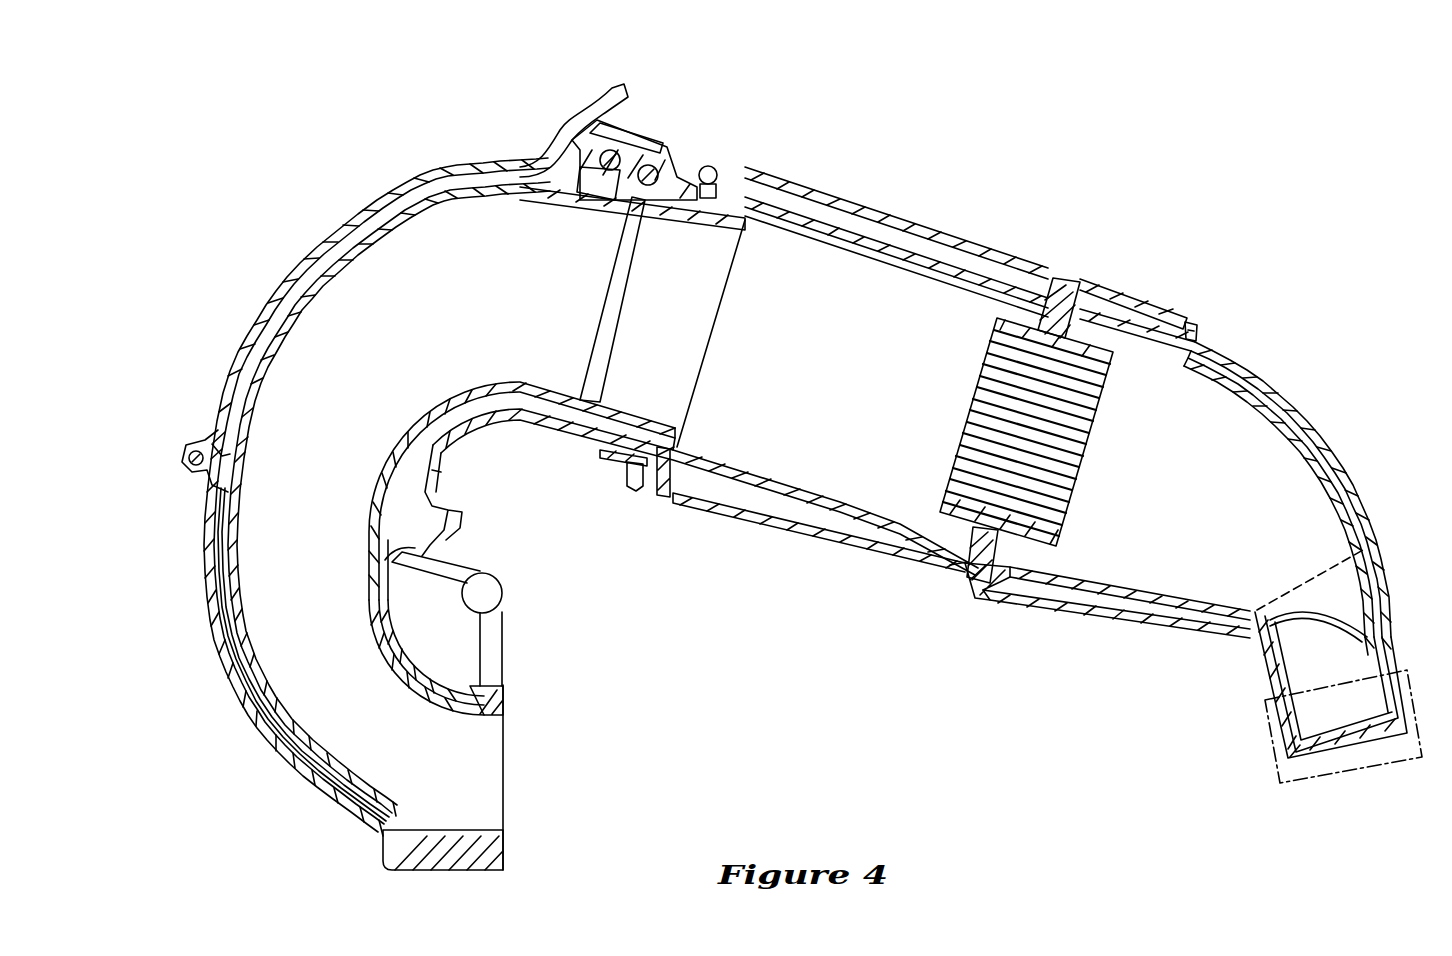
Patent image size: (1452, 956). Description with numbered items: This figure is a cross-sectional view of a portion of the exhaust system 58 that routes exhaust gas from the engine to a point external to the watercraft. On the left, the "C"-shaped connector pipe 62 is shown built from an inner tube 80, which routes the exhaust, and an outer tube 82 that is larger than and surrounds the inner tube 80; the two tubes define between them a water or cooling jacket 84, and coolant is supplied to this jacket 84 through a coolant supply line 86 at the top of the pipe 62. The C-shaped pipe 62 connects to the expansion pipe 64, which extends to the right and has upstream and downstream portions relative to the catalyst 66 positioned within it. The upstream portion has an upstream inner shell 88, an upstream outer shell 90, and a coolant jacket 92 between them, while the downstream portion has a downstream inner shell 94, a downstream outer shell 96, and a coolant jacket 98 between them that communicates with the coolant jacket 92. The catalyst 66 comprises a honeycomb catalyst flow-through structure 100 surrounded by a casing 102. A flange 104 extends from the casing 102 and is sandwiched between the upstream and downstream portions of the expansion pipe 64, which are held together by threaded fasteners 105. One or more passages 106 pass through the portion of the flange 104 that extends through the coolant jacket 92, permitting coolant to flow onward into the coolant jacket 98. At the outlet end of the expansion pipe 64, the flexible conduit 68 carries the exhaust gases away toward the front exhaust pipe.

The exhaust system 58 is at (941, 104).
The "C"-shaped connector pipe 62 is at (236, 293).
The expansion pipe 64 is at (1021, 192).
The catalyst 66 is at (1093, 430).
The flexible conduit 68 is at (1267, 720).
The inner tube 80 is at (322, 280).
The outer tube 82 is at (226, 372).
The water or cooling jacket 84 is at (437, 190).
The coolant supply line 86 is at (620, 113).
The upstream inner shell 88 is at (810, 240).
The upstream outer shell 90 is at (878, 205).
The coolant jacket 92 is at (927, 255).
The downstream inner shell 94 is at (1257, 390).
The downstream outer shell 96 is at (1302, 420).
The coolant jacket 98 is at (1336, 454).
The honeycomb catalyst flow-through structure 100 is at (1045, 493).
The casing 102 is at (1045, 542).
The flange 104 is at (1062, 272).
The threaded fasteners 105 is at (1200, 320).
The passages 106 is at (940, 572).